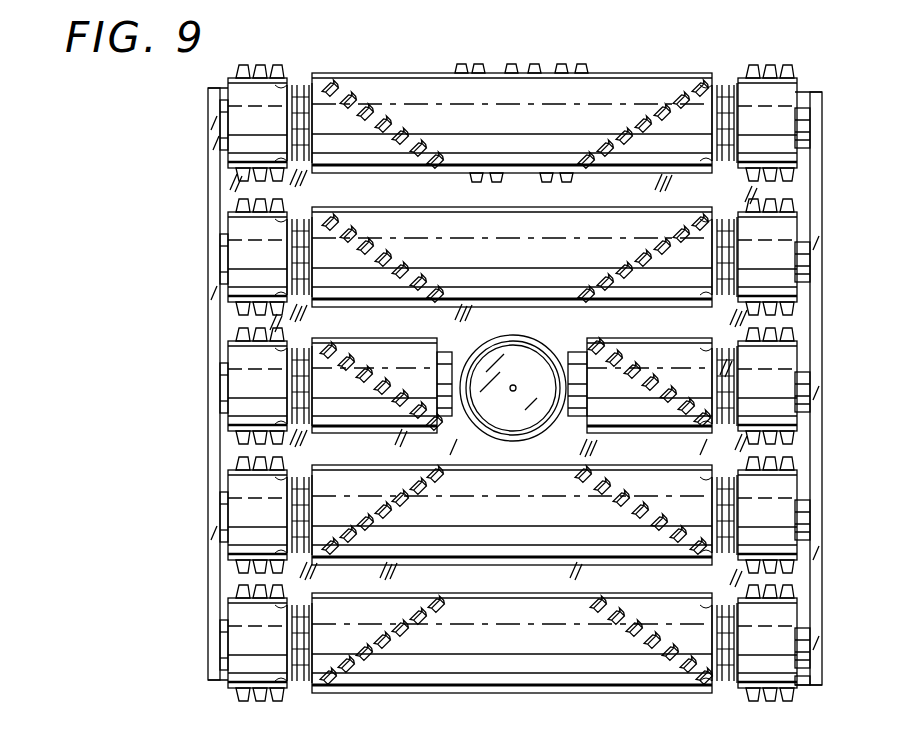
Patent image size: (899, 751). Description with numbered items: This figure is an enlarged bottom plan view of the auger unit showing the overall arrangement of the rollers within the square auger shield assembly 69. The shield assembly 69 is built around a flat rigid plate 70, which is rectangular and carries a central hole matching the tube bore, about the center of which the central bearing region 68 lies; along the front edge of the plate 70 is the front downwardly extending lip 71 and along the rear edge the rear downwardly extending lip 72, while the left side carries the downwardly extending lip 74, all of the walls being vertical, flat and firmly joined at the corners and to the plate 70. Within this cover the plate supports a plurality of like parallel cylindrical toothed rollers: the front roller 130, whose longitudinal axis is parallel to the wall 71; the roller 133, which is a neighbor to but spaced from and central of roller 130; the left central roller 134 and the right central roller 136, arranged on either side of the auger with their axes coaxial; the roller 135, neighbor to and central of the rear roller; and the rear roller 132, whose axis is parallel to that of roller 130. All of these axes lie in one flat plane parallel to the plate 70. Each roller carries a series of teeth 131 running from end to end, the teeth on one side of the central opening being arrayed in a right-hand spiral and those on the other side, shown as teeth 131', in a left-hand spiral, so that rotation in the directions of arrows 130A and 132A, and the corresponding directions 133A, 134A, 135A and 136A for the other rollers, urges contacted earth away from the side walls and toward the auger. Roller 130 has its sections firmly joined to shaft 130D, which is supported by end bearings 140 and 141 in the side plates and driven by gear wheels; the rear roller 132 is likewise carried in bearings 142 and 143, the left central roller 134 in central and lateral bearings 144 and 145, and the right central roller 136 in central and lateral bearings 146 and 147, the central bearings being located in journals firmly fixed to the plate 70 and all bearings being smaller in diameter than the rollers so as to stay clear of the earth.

The central hub / pivot 68 is at (519, 362).
The auger shield assembly 69 is at (862, 400).
The flat rigid plate 70 is at (800, 602).
The front downwardly extending lip 71 is at (226, 86).
The rear downwardly extending lip 72 is at (803, 684).
The left side downwardly extending lip 74 is at (812, 246).
The front toothed roller 130 is at (530, 108).
The direction of rotation arrow for roller 130 130A is at (576, 10).
The shaft of roller 130 130D is at (792, 108).
The teeth 131 is at (516, 106).
The cutting bits 131' is at (517, 450).
The rear toothed roller 132 is at (530, 637).
The direction of rotation arrow for roller 132 132A is at (118, 632).
The toothed roller 133 is at (530, 243).
The direction of rotation of drum 133 133A is at (178, 245).
The left central roller 134 is at (418, 376).
The direction of rotation of drum 134 134A is at (145, 365).
The toothed roller 135 is at (530, 521).
The direction of rotation of drum 135 135A is at (178, 485).
The right central roller 136 is at (625, 432).
The direction of rotation of drum 136 136A is at (790, 391).
The end bearing 140 is at (195, 119).
The end bearing 141 is at (805, 122).
The bearing 142 is at (797, 642).
The bearing 143 is at (200, 639).
The central bearing 144 is at (449, 356).
The lateral bearing 145 is at (222, 387).
The central bearing 146 is at (577, 367).
The lateral bearing 147 is at (808, 392).